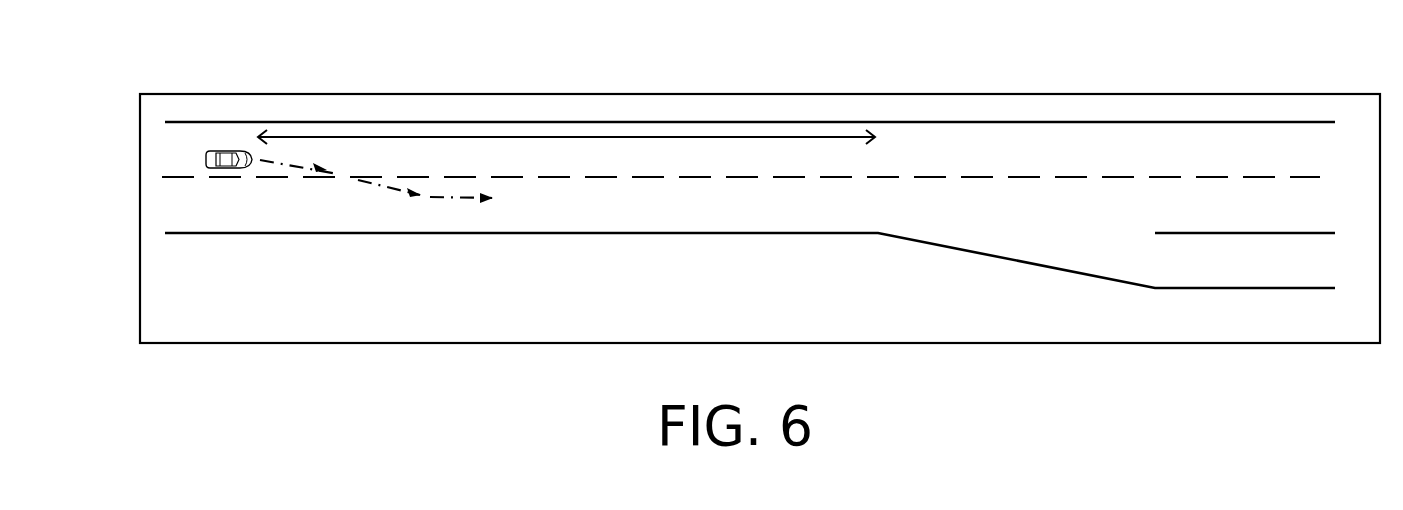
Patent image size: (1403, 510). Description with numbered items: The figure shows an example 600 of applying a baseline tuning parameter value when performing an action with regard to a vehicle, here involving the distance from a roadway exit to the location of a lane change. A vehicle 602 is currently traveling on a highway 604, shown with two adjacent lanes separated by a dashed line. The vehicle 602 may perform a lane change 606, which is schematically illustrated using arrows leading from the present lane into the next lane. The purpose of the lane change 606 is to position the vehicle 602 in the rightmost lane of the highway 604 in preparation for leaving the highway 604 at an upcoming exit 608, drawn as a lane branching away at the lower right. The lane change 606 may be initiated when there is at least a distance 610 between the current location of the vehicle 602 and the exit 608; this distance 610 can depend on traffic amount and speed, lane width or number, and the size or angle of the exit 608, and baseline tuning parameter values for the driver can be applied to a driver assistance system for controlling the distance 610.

The example 600 is at (1325, 36).
The vehicle 602 is at (206, 158).
The highway 604 is at (1323, 162).
The lane change 606 is at (403, 193).
The exit 608 is at (1200, 272).
The distance 610 is at (435, 137).